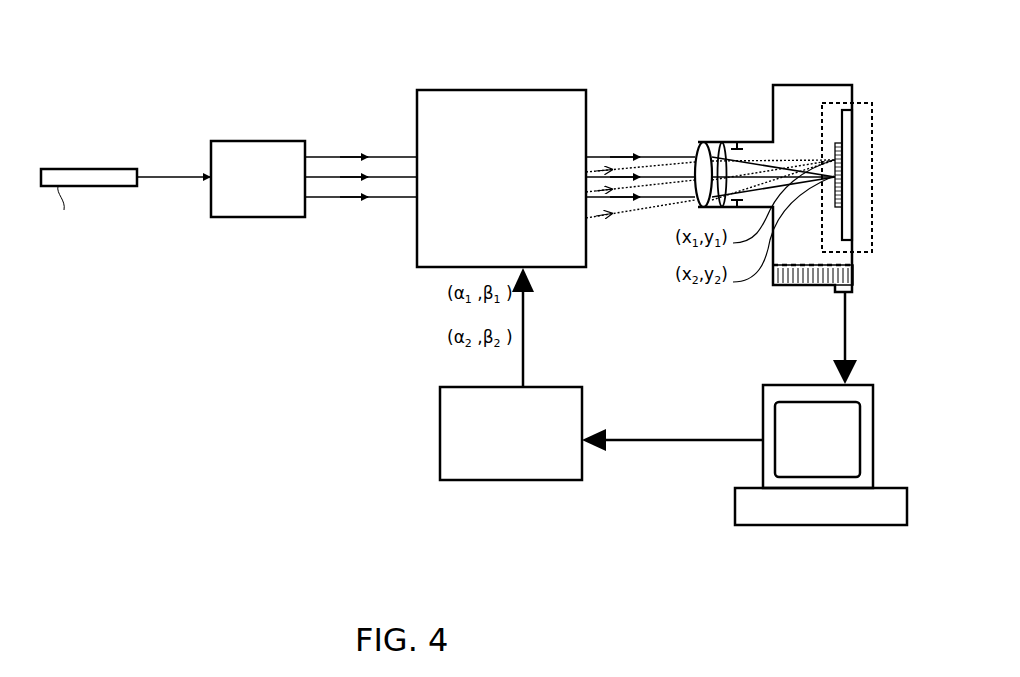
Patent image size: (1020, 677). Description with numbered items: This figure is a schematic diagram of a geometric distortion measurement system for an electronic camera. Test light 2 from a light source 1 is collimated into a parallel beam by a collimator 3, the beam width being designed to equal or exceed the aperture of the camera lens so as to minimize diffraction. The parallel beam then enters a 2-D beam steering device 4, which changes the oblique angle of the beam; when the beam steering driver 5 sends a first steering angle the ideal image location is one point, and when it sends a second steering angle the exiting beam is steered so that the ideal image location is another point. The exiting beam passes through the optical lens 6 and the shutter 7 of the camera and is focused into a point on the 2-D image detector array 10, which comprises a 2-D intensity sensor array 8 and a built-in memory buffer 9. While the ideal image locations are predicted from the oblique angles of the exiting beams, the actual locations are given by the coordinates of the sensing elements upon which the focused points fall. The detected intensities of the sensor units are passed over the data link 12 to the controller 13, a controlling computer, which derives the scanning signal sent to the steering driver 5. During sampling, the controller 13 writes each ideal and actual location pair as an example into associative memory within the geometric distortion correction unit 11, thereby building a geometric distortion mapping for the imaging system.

The light source 1 is at (83, 169).
The test light 2 is at (164, 176).
The collimator 3 is at (256, 140).
The 2-D beam steering device 4 is at (488, 89).
The beam steering driver 5 is at (440, 423).
The optical lens 6 is at (704, 141).
The shutter 7 is at (738, 141).
The 2-D intensity sensor array 8 is at (835, 143).
The built-in memory buffer 9 is at (848, 109).
The 2-D image detector array 10 is at (870, 262).
The geometric distortion correction unit 11 is at (780, 286).
The data link 12 is at (844, 339).
The controller 13 is at (735, 498).